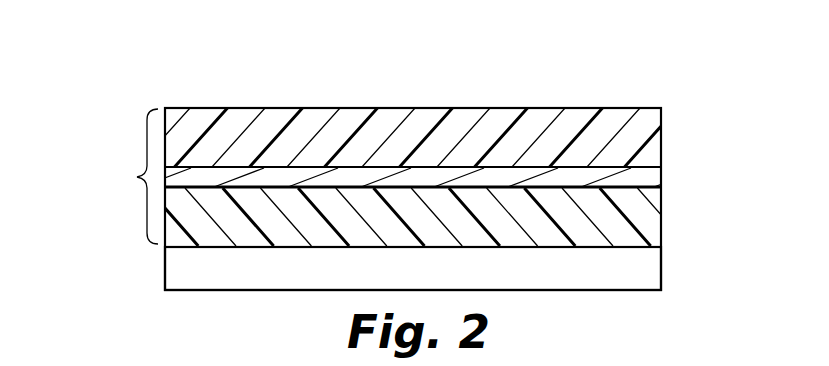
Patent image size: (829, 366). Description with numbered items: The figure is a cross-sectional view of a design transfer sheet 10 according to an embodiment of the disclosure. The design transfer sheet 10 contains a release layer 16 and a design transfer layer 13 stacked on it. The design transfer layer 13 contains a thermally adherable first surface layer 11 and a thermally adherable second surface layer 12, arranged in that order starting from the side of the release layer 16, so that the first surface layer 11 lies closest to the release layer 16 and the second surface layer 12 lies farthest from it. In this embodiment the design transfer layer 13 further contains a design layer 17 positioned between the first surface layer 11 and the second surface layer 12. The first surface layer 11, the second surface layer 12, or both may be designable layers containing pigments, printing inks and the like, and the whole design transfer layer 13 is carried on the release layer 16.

The design transfer sheet 10 is at (650, 92).
The thermally adherable first surface layer 11 is at (647, 225).
The thermally adherable second surface layer 12 is at (647, 129).
The design transfer layer 13 is at (137, 177).
The release layer 16 is at (647, 272).
The design layer 17 is at (647, 181).